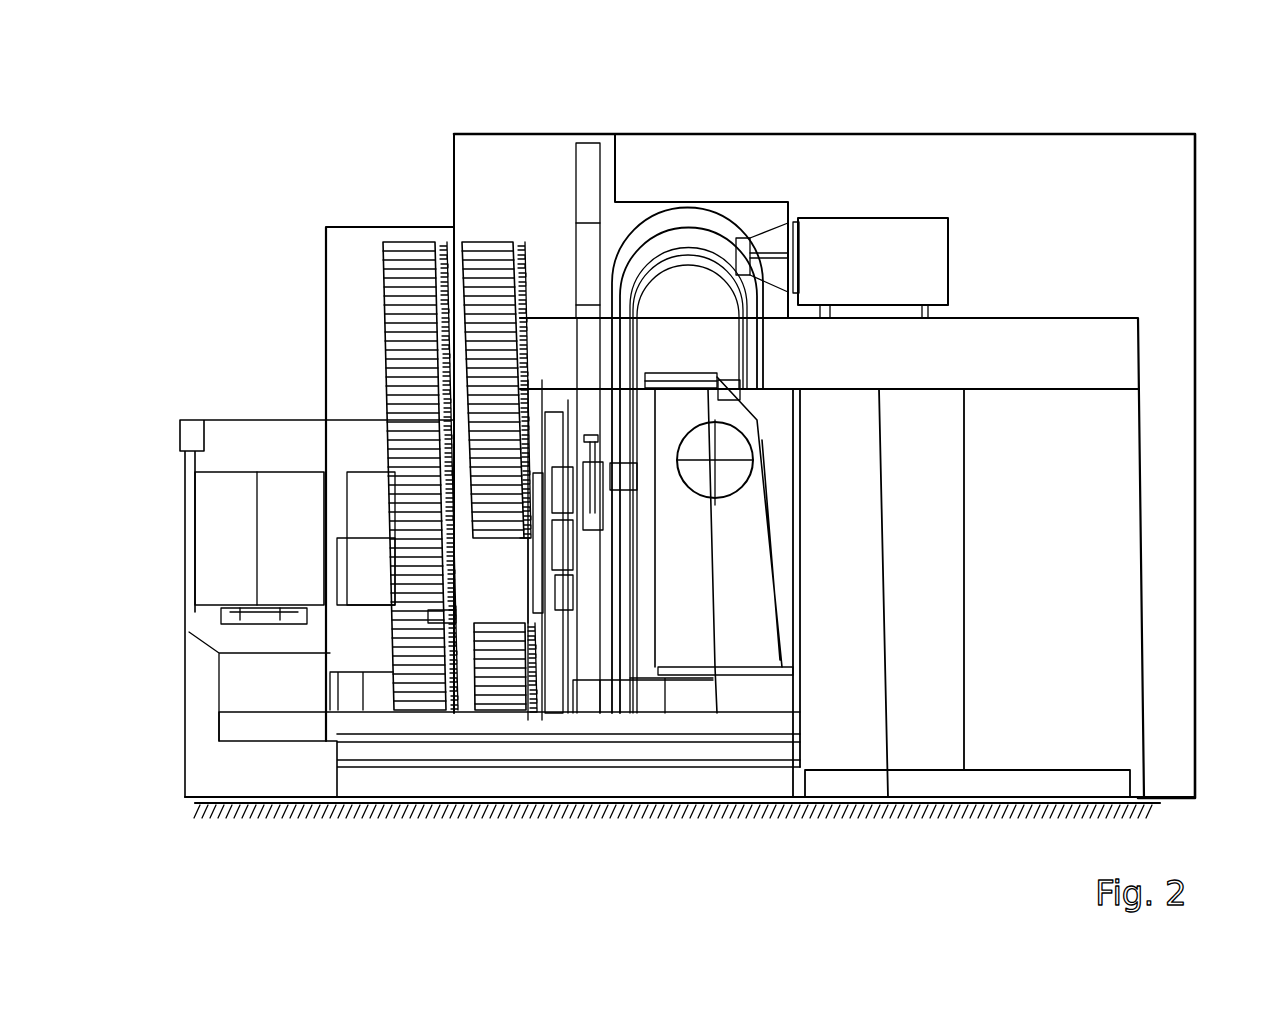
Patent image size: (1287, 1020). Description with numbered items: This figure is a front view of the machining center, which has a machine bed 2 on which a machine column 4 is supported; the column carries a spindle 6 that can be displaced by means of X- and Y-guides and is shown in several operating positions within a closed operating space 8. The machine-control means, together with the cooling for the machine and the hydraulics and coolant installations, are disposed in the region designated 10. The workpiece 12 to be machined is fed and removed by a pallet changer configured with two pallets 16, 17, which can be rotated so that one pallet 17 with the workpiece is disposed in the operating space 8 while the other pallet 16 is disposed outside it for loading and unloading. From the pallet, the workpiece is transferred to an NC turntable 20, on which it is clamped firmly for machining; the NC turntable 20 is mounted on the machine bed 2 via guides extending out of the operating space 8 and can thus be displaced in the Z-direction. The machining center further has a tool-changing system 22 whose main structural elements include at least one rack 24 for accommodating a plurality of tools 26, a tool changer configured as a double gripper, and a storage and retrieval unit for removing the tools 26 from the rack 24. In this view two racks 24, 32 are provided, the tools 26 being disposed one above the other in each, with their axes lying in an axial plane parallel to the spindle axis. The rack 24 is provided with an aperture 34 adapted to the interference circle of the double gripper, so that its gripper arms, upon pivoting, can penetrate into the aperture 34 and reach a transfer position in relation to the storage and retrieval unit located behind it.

The machine bed 2 is at (492, 767).
The machine column 4 is at (742, 592).
The spindle 6 is at (594, 550).
The operating space 8 is at (463, 528).
The region for machine-control means 10 is at (1109, 455).
The workpiece 12 is at (226, 555).
The pallet 16 is at (370, 612).
The pallet 17 is at (440, 618).
The NC turntable 20 is at (490, 617).
The tool-changing system 22 is at (348, 379).
The rack 24 is at (487, 230).
The tools 26 is at (522, 243).
The rack 32 is at (394, 226).
The aperture 34 is at (474, 577).